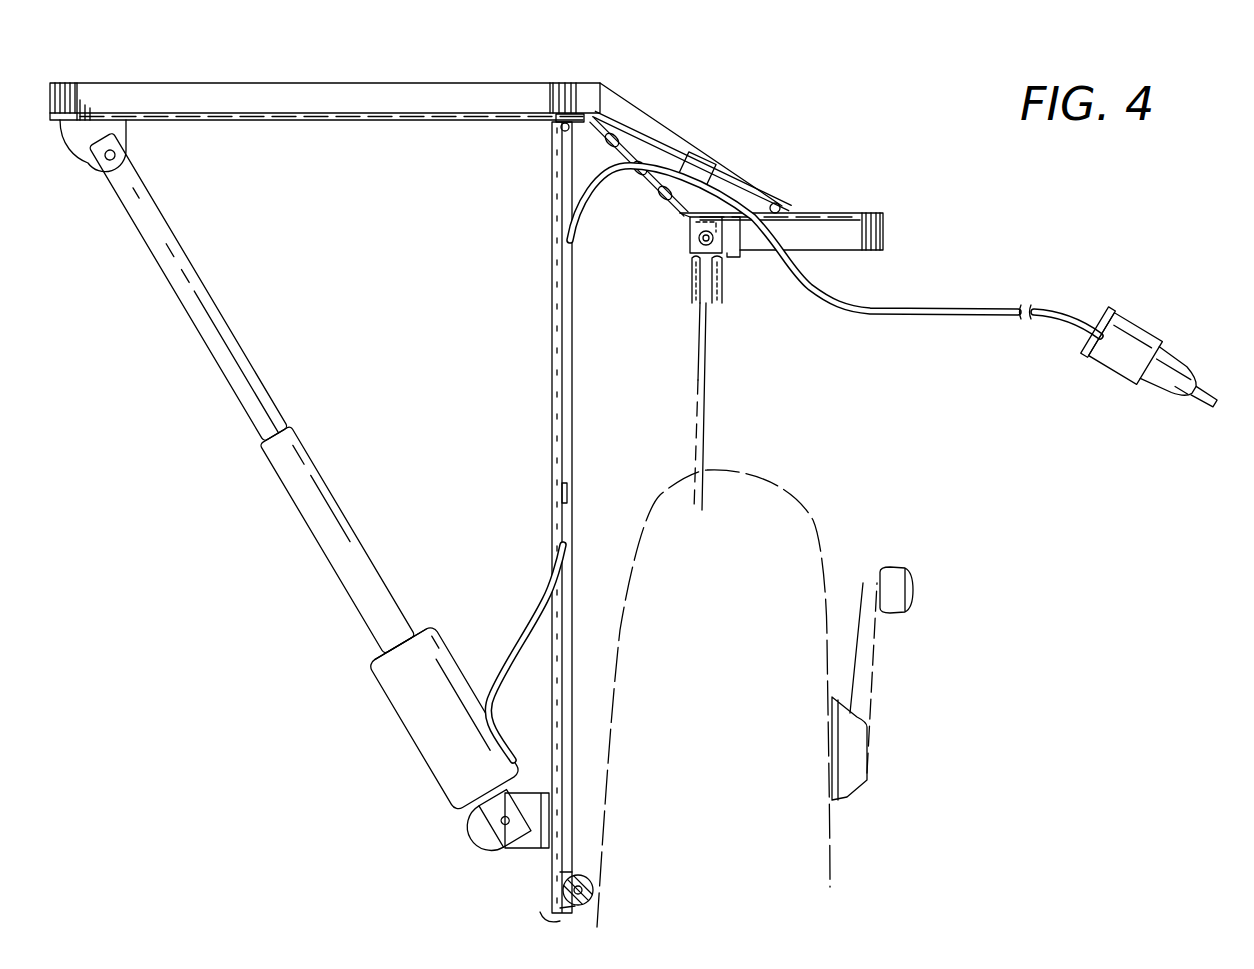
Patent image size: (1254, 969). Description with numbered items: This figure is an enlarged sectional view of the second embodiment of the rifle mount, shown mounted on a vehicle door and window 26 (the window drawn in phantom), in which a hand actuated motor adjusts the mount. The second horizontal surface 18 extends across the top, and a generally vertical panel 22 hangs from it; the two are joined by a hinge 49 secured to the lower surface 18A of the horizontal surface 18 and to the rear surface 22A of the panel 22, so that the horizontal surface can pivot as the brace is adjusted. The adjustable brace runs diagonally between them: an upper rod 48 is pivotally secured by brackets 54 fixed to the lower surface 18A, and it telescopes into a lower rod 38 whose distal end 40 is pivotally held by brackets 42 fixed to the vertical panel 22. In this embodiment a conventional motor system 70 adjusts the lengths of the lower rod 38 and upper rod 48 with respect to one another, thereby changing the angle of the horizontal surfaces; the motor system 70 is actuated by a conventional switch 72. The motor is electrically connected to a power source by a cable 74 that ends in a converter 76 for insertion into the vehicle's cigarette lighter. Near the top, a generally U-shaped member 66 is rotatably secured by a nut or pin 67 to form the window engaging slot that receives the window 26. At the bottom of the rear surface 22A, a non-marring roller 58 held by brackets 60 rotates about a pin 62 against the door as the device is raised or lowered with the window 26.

The second horizontal surface 18 is at (210, 103).
The lower surface of horizontal surface 18A is at (287, 120).
The vertical panel 22 is at (552, 420).
The rear surface of panel 22A is at (563, 353).
The vehicle window 26 is at (703, 367).
The lower rod 38 is at (313, 530).
The distal end of lower rod 40 is at (390, 643).
The brackets 42 is at (483, 843).
The upper rod 48 is at (223, 365).
The hinge 49 is at (576, 115).
The brackets 54 is at (83, 163).
The roller 58 is at (590, 903).
The brackets 60 is at (552, 917).
The pin 62 is at (587, 870).
The U-shaped member 66 is at (720, 290).
The nut or pin 67 is at (690, 238).
The motor system 70 is at (407, 727).
The switch 72 is at (707, 180).
The power cord 74 is at (914, 316).
The converter 76 is at (1118, 360).